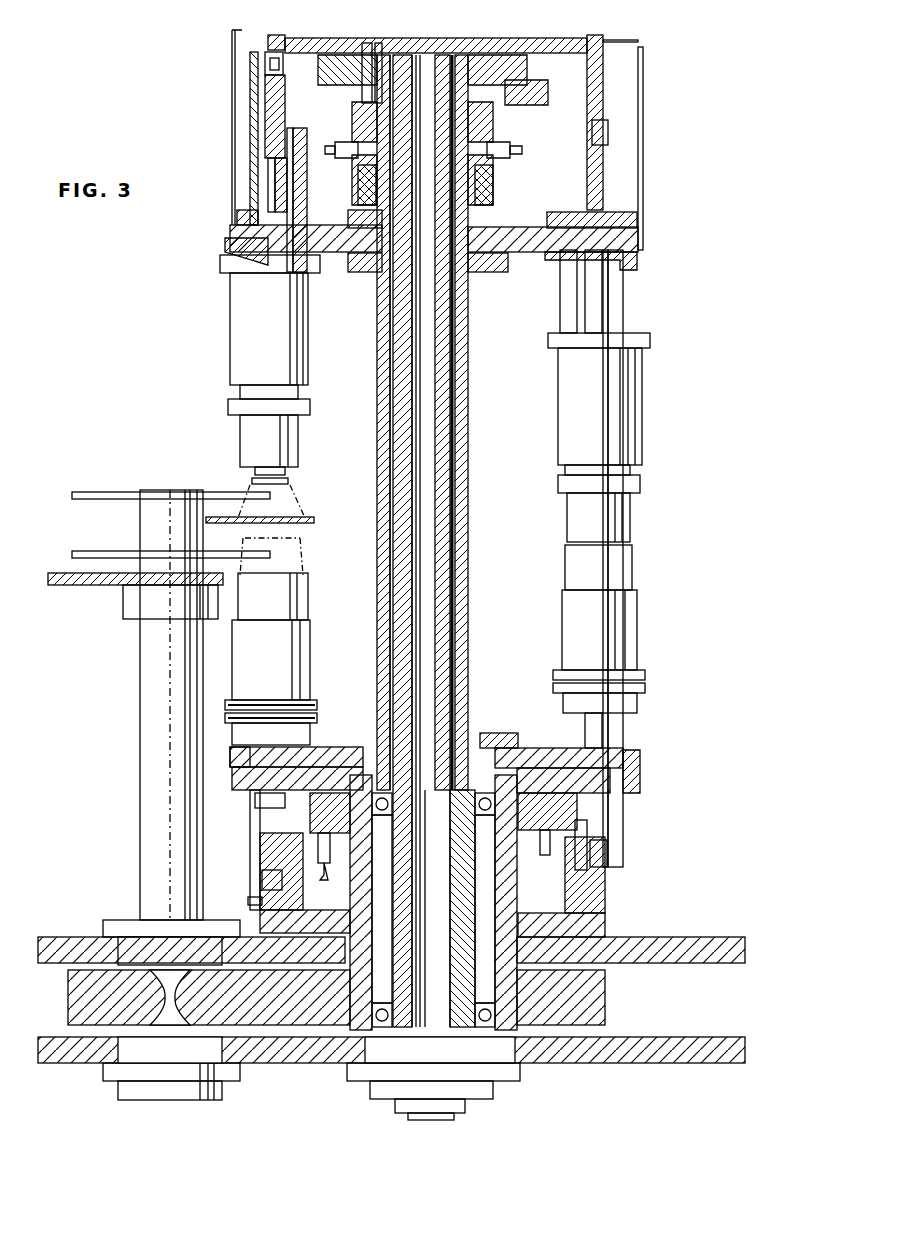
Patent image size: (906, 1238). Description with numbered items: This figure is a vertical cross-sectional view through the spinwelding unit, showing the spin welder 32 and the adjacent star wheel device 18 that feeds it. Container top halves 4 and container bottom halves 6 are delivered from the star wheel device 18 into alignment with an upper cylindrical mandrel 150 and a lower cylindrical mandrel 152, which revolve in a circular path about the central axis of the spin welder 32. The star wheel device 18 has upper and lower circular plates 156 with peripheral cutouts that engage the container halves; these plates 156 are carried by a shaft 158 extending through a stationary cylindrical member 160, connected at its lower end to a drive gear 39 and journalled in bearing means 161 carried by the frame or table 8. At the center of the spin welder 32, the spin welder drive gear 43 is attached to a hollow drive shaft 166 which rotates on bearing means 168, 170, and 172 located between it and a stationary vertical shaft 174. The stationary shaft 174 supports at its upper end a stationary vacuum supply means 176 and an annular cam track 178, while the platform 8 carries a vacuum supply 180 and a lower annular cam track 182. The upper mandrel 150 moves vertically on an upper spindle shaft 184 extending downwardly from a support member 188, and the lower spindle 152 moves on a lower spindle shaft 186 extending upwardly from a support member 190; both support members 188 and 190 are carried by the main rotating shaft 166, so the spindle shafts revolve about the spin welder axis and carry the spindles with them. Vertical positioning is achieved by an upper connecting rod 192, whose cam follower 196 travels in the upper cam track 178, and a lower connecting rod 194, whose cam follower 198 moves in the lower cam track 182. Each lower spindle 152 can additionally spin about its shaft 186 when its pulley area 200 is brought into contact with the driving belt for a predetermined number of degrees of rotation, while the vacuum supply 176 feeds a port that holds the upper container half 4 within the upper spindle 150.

The spin welder 32 is at (452, 38).
The stationary vacuum supply means 176 is at (372, 48).
The annular cam track 178 is at (608, 78).
The cam follower 196 is at (284, 72).
The connecting rod 192 is at (264, 100).
The bearing means 172 is at (495, 200).
The upper spindle shaft 184 is at (245, 252).
The support member 188 is at (575, 262).
The hollow drive shaft 166 is at (388, 302).
The stationary vertical shaft 174 is at (455, 368).
The upper cylindrical mandrel 150 is at (232, 350).
The container top half 4 is at (303, 497).
The container bottom half 6 is at (303, 552).
The lower cylindrical mandrel 152 is at (306, 650).
The pulley area 200 is at (230, 710).
The stationary cylindrical member 160 is at (140, 720).
The star wheel device 18 is at (145, 492).
The circular plates 156 is at (98, 497).
The shaft 158 is at (125, 585).
The drive gear 39 is at (70, 1002).
The bearing means 161 is at (222, 1090).
The frame or table 8 is at (672, 955).
The spin welder drive gear 43 is at (585, 1003).
The bearing means 168 is at (500, 1030).
The support member 190 is at (345, 747).
The bearing means 170 is at (528, 750).
The lower spindle shaft 186 is at (235, 760).
The connecting rod 194 is at (258, 836).
The cam follower 198 is at (262, 878).
The annular cam track 182 is at (250, 900).
The vacuum supply 180 is at (325, 865).